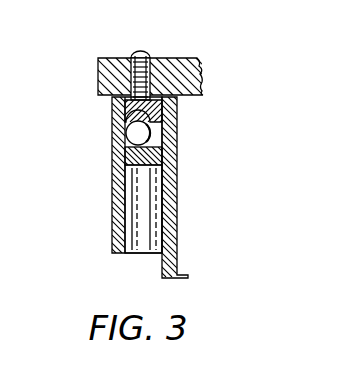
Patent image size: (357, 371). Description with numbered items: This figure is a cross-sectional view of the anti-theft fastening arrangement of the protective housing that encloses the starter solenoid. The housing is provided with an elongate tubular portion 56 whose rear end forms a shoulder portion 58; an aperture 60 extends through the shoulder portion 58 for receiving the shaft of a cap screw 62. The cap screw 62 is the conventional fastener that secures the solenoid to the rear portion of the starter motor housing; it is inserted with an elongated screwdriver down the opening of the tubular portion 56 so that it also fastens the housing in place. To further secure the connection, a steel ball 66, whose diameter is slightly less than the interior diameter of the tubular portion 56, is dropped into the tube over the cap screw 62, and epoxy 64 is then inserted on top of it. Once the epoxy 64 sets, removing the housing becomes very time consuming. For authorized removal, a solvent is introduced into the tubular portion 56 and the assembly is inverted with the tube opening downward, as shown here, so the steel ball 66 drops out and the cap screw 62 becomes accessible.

The tubular portion 56 is at (115, 233).
The shoulder portion 58 is at (150, 110).
The aperture 60 is at (128, 62).
The cap screw 62 is at (158, 116).
The epoxy 64 is at (122, 163).
The steel ball 66 is at (135, 134).